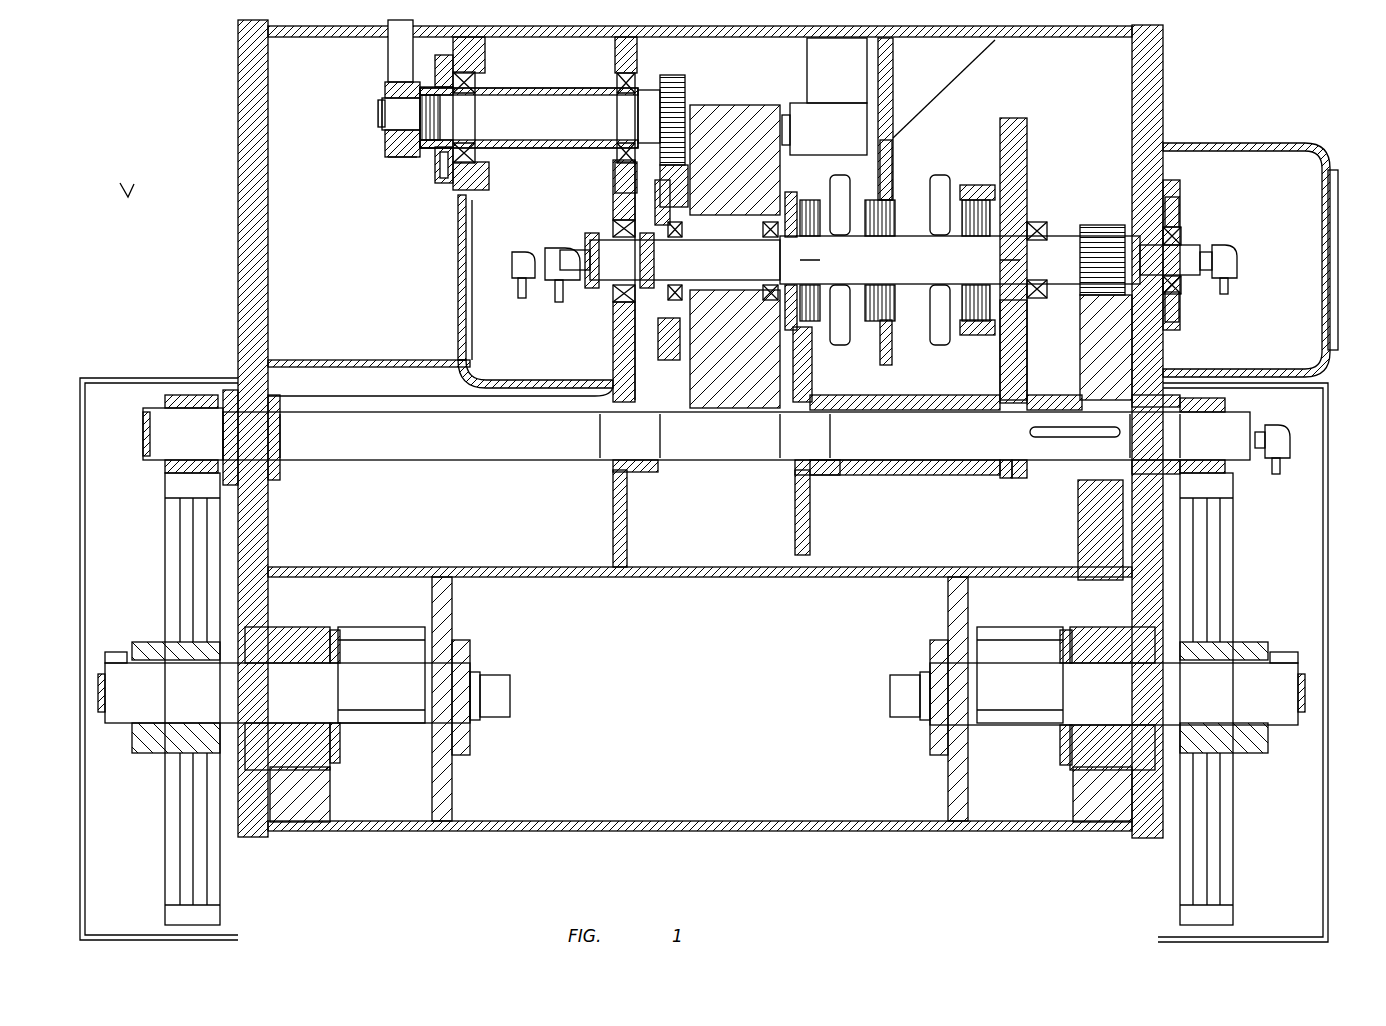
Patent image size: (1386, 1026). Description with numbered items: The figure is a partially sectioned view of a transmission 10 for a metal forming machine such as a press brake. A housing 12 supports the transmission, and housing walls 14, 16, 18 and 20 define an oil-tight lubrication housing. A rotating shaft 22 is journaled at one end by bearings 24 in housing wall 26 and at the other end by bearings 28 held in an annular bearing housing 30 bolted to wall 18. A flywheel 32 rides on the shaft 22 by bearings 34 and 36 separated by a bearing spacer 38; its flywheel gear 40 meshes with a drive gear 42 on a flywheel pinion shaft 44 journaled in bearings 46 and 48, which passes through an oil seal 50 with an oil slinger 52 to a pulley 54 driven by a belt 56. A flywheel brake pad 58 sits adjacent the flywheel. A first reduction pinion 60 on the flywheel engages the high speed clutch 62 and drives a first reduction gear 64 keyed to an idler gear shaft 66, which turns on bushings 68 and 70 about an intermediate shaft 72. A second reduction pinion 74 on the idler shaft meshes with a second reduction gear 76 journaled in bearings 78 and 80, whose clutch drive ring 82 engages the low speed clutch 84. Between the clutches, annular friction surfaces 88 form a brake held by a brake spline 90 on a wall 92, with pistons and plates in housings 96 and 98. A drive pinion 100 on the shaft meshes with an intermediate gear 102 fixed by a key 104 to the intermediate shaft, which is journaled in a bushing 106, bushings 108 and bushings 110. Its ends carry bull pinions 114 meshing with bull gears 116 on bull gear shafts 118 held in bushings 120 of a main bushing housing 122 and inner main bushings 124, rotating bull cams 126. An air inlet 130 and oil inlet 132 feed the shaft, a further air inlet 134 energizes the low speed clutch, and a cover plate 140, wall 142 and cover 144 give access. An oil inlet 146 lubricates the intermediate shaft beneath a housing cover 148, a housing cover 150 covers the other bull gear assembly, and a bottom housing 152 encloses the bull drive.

The transmission 10 is at (86, 128).
The housing 12 is at (246, 80).
The housing wall 14 is at (478, 50).
The housing wall 16 is at (780, 577).
The housing wall 18 is at (1146, 108).
The housing wall 20 is at (1035, 38).
The rotating shaft 22 is at (898, 276).
The bearings 24 is at (610, 286).
The housing wall 26 is at (615, 330).
The bearings 28 is at (1172, 212).
The annular bearing housing 30 is at (1180, 192).
The flywheel 32 is at (705, 130).
The bearing 34 is at (648, 215).
The bearing 36 is at (775, 212).
The bearing spacer 38 is at (745, 235).
The flywheel gear 40 is at (670, 350).
The drive gear 42 is at (675, 95).
The flywheel pinion shaft 44 is at (550, 110).
The bearing 46 is at (630, 80).
The bearing 48 is at (473, 80).
The oil seal 50 is at (428, 172).
The oil slinger 52 is at (448, 180).
The sprocket or pulley 54 is at (385, 150).
The belt 56 is at (400, 66).
The flywheel brake pad 58 is at (852, 84).
The first reduction pinion 60 is at (792, 200).
The high speed clutch 62 is at (805, 225).
The first reduction gear 64 is at (812, 380).
The idler gear shaft 66 is at (910, 478).
The bushing 68 is at (812, 492).
The bushing 70 is at (1018, 482).
The intermediate shaft 72 is at (885, 450).
The second reduction pinion 74 is at (1005, 482).
The second reduction gear 76 is at (1010, 368).
The bearing 78 is at (1012, 222).
The bearing 80 is at (1036, 225).
The clutch drive ring 82 is at (972, 195).
The low speed clutch 84 is at (978, 222).
The annular friction surfaces 88 is at (882, 228).
The brake spline 90 is at (892, 185).
The wall 92 is at (887, 80).
The housing 96 is at (838, 165).
The housing 98 is at (940, 168).
The drive pinion 100 is at (1100, 226).
The intermediate gear 102 is at (1095, 338).
The key 104 is at (1068, 400).
The bushing 106 is at (1160, 472).
The bushings 108 is at (655, 478).
The bushings 110 is at (264, 470).
The bull pinions 114 is at (165, 465).
The bull gear 116 is at (190, 566).
The bull gear shafts 118 is at (290, 682).
The bushings 120 is at (332, 730).
The main bushing housing 122 is at (288, 748).
The inner main bushings 124 is at (465, 735).
The bull cams 126 is at (400, 679).
The air inlet 130 is at (520, 280).
The oil inlet 132 is at (542, 290).
The air inlet 134 is at (1218, 245).
The cover plate 140 is at (458, 270).
The wall 142 is at (1262, 143).
The cover 144 is at (1336, 250).
The oil inlet 146 is at (1292, 440).
The housing cover 148 is at (1326, 566).
The housing cover 150 is at (82, 497).
The bottom housing 152 is at (820, 832).